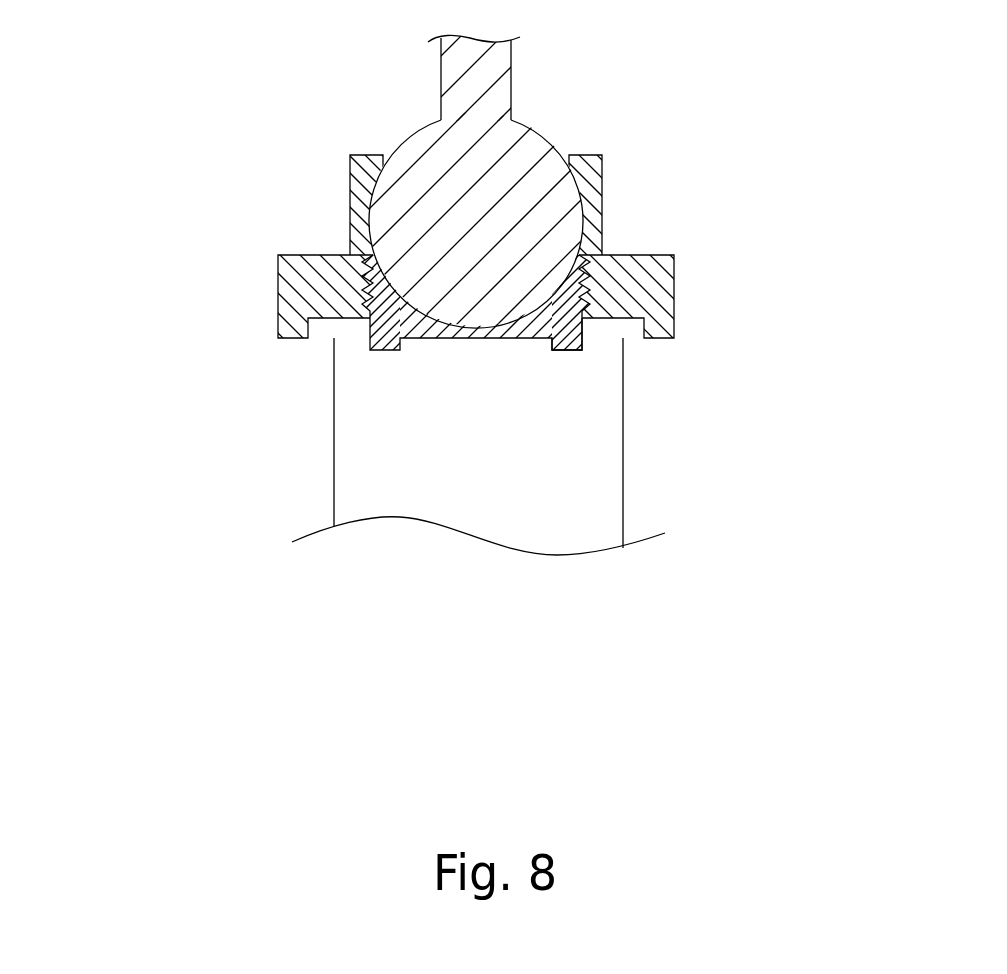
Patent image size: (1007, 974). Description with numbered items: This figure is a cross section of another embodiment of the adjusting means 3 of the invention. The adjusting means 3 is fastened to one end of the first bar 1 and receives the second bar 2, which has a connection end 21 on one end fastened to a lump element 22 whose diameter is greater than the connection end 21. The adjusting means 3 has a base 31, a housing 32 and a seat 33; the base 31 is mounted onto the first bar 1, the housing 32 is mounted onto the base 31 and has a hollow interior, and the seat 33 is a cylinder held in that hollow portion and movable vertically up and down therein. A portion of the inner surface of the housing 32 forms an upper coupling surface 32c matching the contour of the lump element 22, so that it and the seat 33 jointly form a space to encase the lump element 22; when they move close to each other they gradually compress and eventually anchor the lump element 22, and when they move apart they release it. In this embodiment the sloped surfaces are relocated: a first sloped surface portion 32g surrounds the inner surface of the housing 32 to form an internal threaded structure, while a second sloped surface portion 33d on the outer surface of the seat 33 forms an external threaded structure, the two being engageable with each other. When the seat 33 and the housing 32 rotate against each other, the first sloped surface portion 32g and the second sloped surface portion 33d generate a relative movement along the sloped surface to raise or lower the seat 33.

The first bar 1 is at (640, 447).
The second bar 2 is at (490, 179).
The connection end 21 is at (517, 70).
The lump element 22 is at (553, 145).
The adjusting means 3 is at (120, 147).
The base 31 is at (333, 357).
The housing 32 is at (480, 249).
The upper coupling surface 32c is at (372, 172).
The first sloped surface portion 32g is at (588, 262).
The seat 33 is at (485, 228).
The second sloped surface portion 33d is at (573, 310).